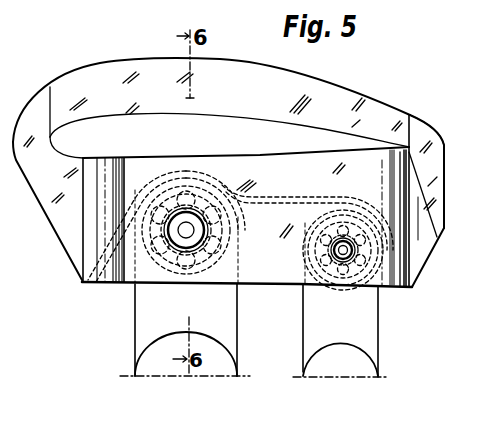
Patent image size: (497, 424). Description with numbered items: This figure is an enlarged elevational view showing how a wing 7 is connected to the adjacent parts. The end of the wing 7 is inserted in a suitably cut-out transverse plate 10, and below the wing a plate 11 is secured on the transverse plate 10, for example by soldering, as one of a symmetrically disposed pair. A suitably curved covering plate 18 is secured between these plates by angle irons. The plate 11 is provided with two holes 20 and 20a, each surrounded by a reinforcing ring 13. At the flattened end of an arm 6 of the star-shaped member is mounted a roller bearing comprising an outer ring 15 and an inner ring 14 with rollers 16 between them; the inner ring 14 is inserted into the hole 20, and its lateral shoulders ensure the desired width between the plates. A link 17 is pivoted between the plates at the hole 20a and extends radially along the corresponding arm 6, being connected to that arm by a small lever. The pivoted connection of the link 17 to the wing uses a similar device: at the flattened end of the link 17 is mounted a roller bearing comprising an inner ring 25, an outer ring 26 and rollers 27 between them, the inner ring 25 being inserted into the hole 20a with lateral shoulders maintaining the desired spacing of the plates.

The arm 6 is at (142, 327).
The wing 7 is at (285, 125).
The transverse plate 10 is at (393, 115).
The plate 11 is at (269, 279).
The reinforcing ring 13 is at (198, 211).
The inner ring 14 is at (197, 238).
The outer ring 15 is at (215, 236).
The rollers 16 is at (167, 204).
The link 17 is at (380, 342).
The covering plate 18 is at (270, 195).
The hole 20 is at (187, 230).
The hole 20a is at (350, 255).
The inner ring 25 is at (343, 258).
The outer ring 26 is at (317, 272).
The rollers 27 is at (358, 226).